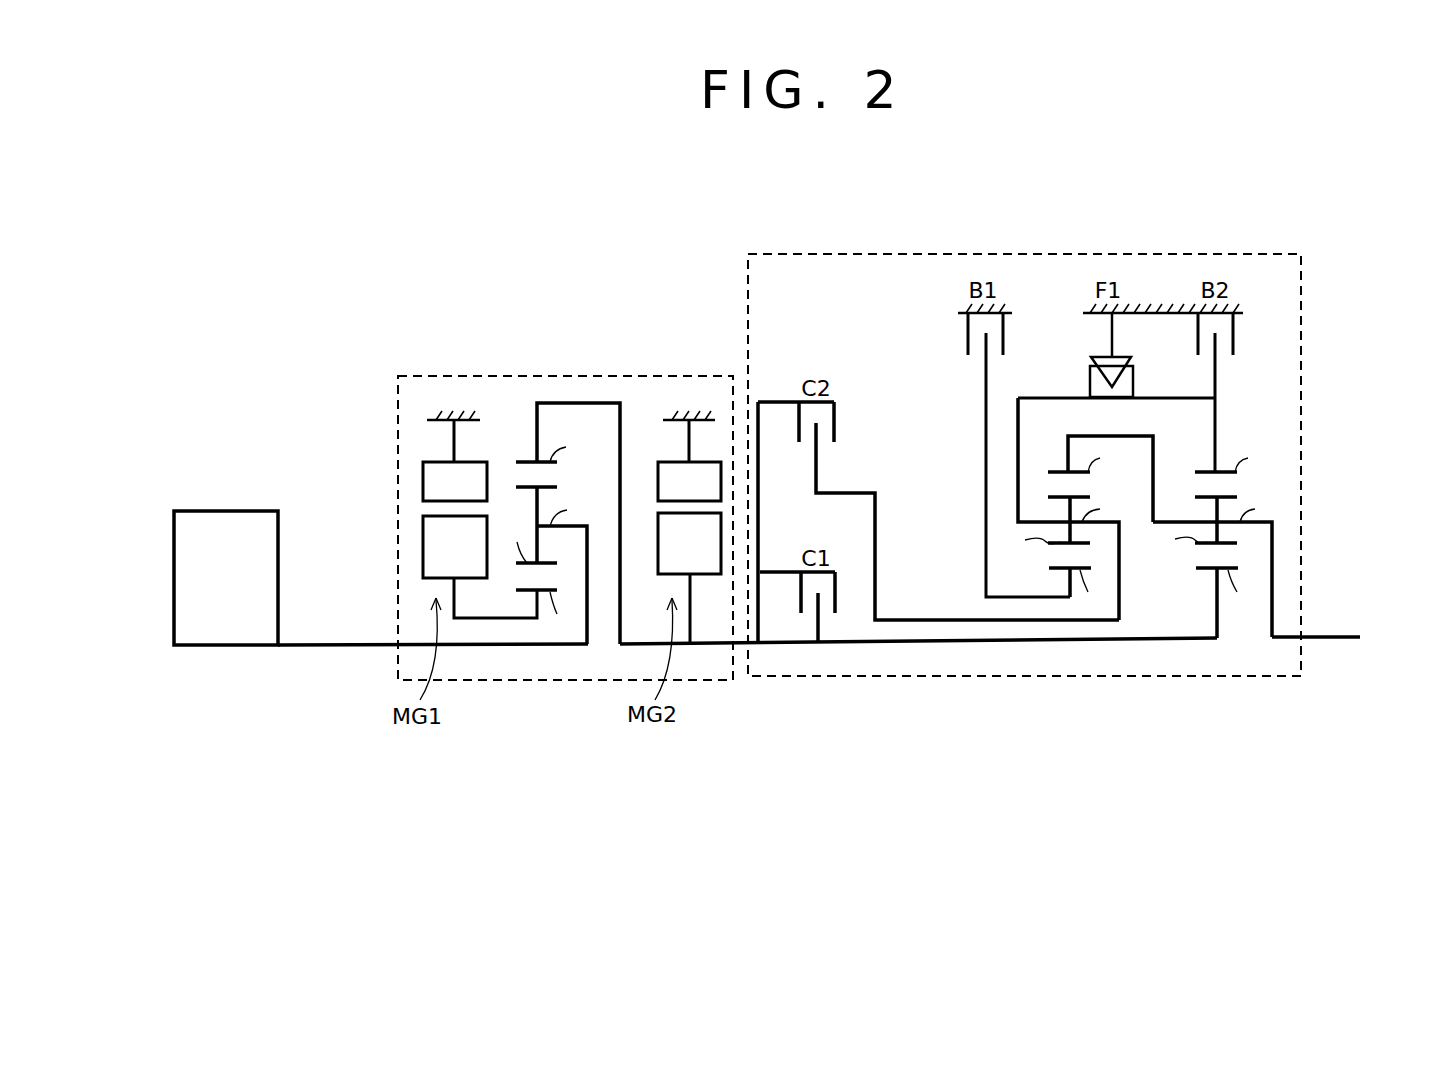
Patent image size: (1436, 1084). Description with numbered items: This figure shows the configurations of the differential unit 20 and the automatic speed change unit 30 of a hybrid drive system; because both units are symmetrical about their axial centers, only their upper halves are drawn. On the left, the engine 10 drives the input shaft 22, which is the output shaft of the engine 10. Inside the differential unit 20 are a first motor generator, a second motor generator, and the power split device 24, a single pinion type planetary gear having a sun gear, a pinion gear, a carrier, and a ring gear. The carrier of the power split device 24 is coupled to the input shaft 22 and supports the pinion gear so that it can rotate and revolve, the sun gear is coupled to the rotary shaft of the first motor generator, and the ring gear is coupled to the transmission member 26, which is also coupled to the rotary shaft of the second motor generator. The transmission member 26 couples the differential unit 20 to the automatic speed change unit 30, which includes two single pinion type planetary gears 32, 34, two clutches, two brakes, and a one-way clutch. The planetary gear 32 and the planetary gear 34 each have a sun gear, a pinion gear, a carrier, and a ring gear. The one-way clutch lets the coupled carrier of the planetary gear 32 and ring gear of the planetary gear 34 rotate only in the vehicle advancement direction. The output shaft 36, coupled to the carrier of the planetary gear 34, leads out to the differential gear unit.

The engine 10 is at (240, 511).
The differential unit 20 is at (665, 376).
The input shaft 22 is at (340, 647).
The power split device 24 is at (535, 651).
The transmission member 26 is at (714, 647).
The automatic speed change unit 30 is at (1243, 254).
The planetary gear 32 is at (1079, 647).
The planetary gear 34 is at (1229, 647).
The output shaft 36 is at (1330, 637).